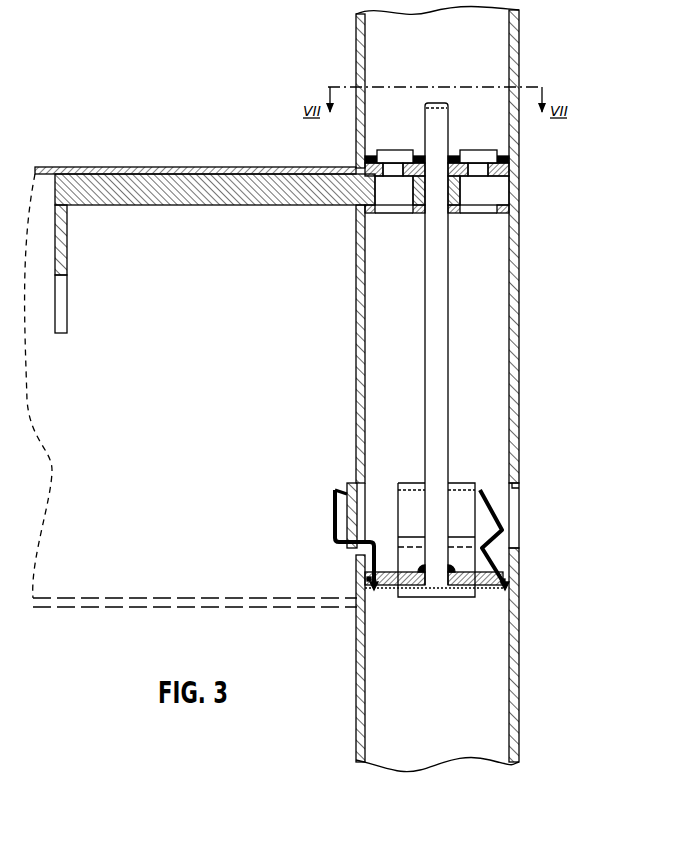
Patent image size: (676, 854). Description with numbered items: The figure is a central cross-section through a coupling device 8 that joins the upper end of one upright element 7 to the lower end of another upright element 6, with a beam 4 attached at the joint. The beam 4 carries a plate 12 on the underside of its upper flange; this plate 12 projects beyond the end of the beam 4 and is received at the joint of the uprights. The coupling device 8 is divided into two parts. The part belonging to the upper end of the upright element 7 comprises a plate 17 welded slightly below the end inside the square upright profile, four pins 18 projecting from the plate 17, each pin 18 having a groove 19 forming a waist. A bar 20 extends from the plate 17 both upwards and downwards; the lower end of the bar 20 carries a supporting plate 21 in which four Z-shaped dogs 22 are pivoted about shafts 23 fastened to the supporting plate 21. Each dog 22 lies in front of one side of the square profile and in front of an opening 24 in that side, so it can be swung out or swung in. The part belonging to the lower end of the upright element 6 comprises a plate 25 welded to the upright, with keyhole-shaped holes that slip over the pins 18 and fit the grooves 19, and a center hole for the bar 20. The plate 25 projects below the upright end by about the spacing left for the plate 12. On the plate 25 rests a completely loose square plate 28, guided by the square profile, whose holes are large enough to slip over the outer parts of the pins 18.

The beam 4 is at (130, 155).
The upright element 6 is at (522, 670).
The upright element 7 is at (524, 68).
The coupling device 8 is at (522, 356).
The plate 12 is at (253, 178).
The plate 17 is at (503, 212).
The pin 18 is at (492, 190).
The groove 19 is at (512, 165).
The bar 20 is at (440, 297).
The supporting plate 21 is at (480, 566).
The Z-shaped dog 22 is at (492, 513).
The shaft 23 is at (508, 582).
The opening 24 is at (518, 490).
The plate 25 is at (515, 181).
The loose plate 28 is at (512, 152).